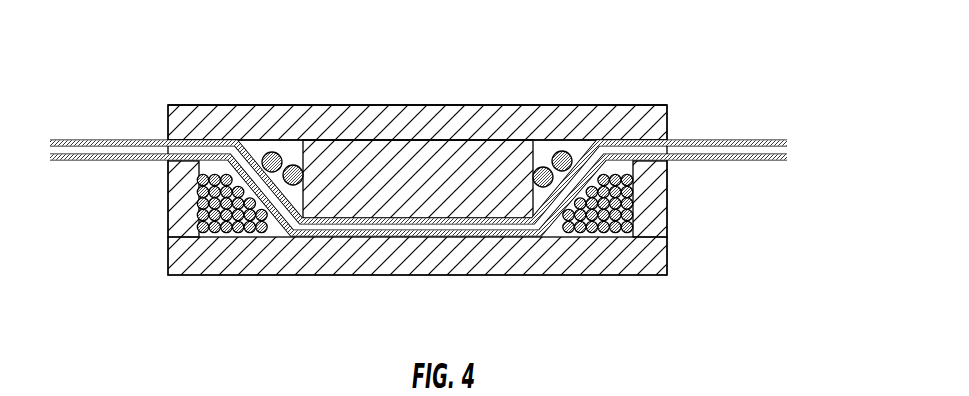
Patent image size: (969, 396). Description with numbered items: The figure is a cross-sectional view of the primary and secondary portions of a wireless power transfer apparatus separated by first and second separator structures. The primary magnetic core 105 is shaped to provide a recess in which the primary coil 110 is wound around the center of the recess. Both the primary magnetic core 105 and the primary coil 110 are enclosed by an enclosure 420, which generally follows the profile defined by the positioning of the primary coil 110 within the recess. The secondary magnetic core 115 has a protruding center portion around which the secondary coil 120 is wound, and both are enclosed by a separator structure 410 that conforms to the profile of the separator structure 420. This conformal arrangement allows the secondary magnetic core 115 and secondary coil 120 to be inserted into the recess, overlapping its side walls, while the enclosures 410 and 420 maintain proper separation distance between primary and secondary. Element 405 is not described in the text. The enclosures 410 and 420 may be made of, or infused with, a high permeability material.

The primary magnetic core 105 is at (677, 283).
The primary coil 110 is at (586, 237).
The secondary magnetic core 115 is at (522, 105).
The secondary coil 120 is at (299, 153).
The ribbon assembly 405 is at (448, 146).
The separator structure 410 is at (787, 143).
The separator structure 420 is at (787, 158).